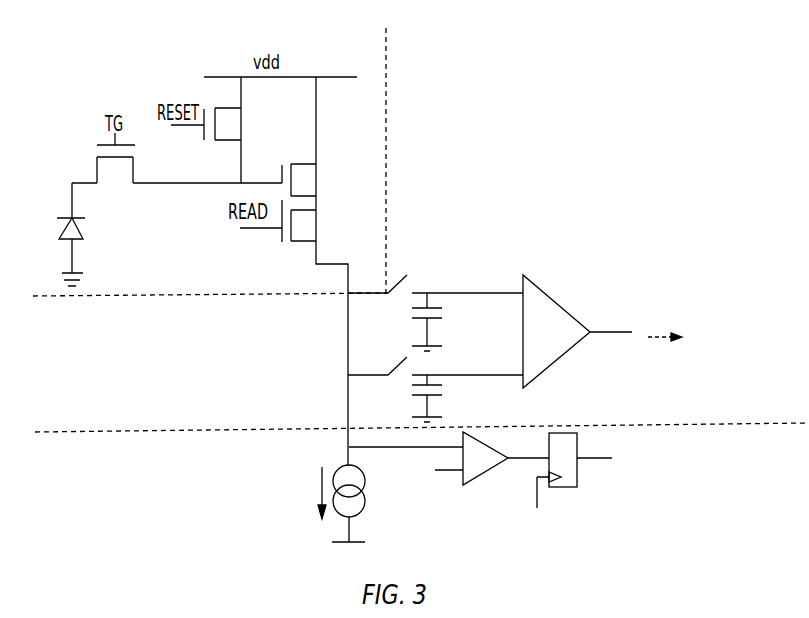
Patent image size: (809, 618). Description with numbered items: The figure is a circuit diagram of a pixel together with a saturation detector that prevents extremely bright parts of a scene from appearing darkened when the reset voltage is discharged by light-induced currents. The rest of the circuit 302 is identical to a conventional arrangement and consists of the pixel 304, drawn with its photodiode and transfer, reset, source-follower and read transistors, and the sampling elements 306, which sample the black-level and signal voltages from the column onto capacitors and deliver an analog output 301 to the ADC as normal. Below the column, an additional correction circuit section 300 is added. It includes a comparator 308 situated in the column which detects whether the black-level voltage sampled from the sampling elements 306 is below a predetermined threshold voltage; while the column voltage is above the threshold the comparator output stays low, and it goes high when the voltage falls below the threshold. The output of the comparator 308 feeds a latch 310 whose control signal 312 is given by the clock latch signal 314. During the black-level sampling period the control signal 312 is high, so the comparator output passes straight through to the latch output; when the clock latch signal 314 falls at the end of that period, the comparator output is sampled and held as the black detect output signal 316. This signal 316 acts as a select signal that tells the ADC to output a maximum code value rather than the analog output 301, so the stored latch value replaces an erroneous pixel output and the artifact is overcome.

The correction circuit section 300 is at (770, 469).
The analog output 301 is at (656, 325).
The rest of the circuit 302 is at (700, 233).
The pixel 304 is at (58, 233).
The sampling elements 306 is at (478, 293).
The comparator 308 is at (490, 443).
The latch 310 is at (582, 480).
The control signal 312 is at (537, 487).
The clk_latch 314 is at (557, 538).
The blk_detect_out signal 316 is at (700, 442).